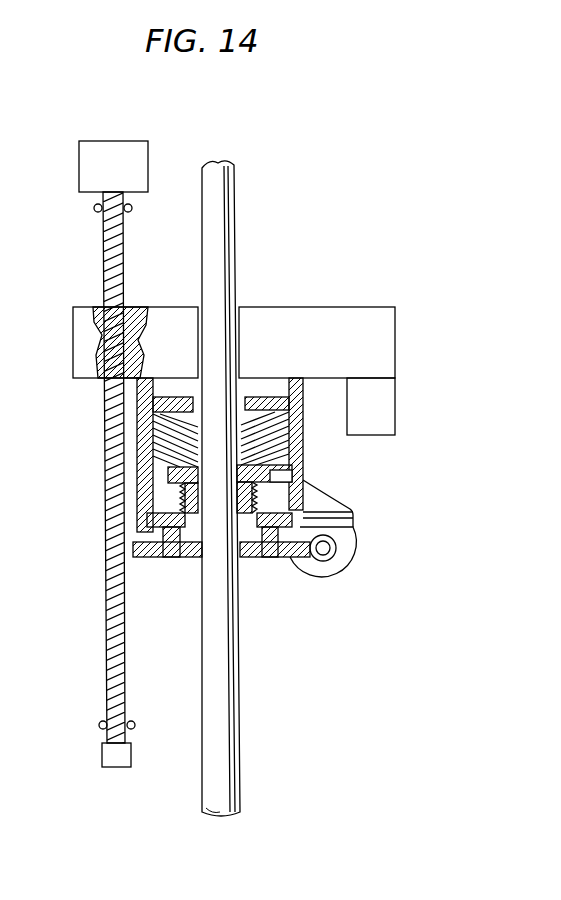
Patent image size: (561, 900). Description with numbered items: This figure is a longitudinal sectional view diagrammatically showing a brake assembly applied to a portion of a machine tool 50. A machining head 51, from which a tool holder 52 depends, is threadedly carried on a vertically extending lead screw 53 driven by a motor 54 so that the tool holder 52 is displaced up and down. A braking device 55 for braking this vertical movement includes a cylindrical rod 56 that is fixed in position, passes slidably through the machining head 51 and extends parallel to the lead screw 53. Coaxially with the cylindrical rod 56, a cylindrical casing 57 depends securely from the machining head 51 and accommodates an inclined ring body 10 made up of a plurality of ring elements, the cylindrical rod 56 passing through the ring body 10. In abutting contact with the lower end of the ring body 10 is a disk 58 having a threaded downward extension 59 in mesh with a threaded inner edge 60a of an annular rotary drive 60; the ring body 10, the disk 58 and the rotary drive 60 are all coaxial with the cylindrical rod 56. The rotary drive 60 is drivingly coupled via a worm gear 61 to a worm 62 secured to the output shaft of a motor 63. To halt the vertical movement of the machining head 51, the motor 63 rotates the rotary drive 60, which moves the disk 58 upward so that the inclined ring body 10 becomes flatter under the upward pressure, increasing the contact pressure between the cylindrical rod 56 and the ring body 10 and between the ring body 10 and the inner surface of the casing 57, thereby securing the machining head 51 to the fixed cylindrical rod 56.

The machine tool 50 is at (305, 222).
The machining head 51 is at (352, 308).
The tool holder 52 is at (390, 407).
The lead screw 53 is at (105, 622).
The motor 54 is at (125, 143).
The braking device 55 is at (385, 473).
The cylindrical rod 56 is at (232, 753).
The cylindrical casing 57 is at (143, 404).
The inclined ring body 10 is at (147, 425).
The disk 58 is at (170, 469).
The threaded downward extension 59 is at (181, 490).
The annular rotary drive 60 is at (147, 521).
The threaded inner edge 60a is at (283, 557).
The worm gear 61 is at (152, 557).
The worm 62 is at (333, 558).
The motor 63 is at (347, 532).